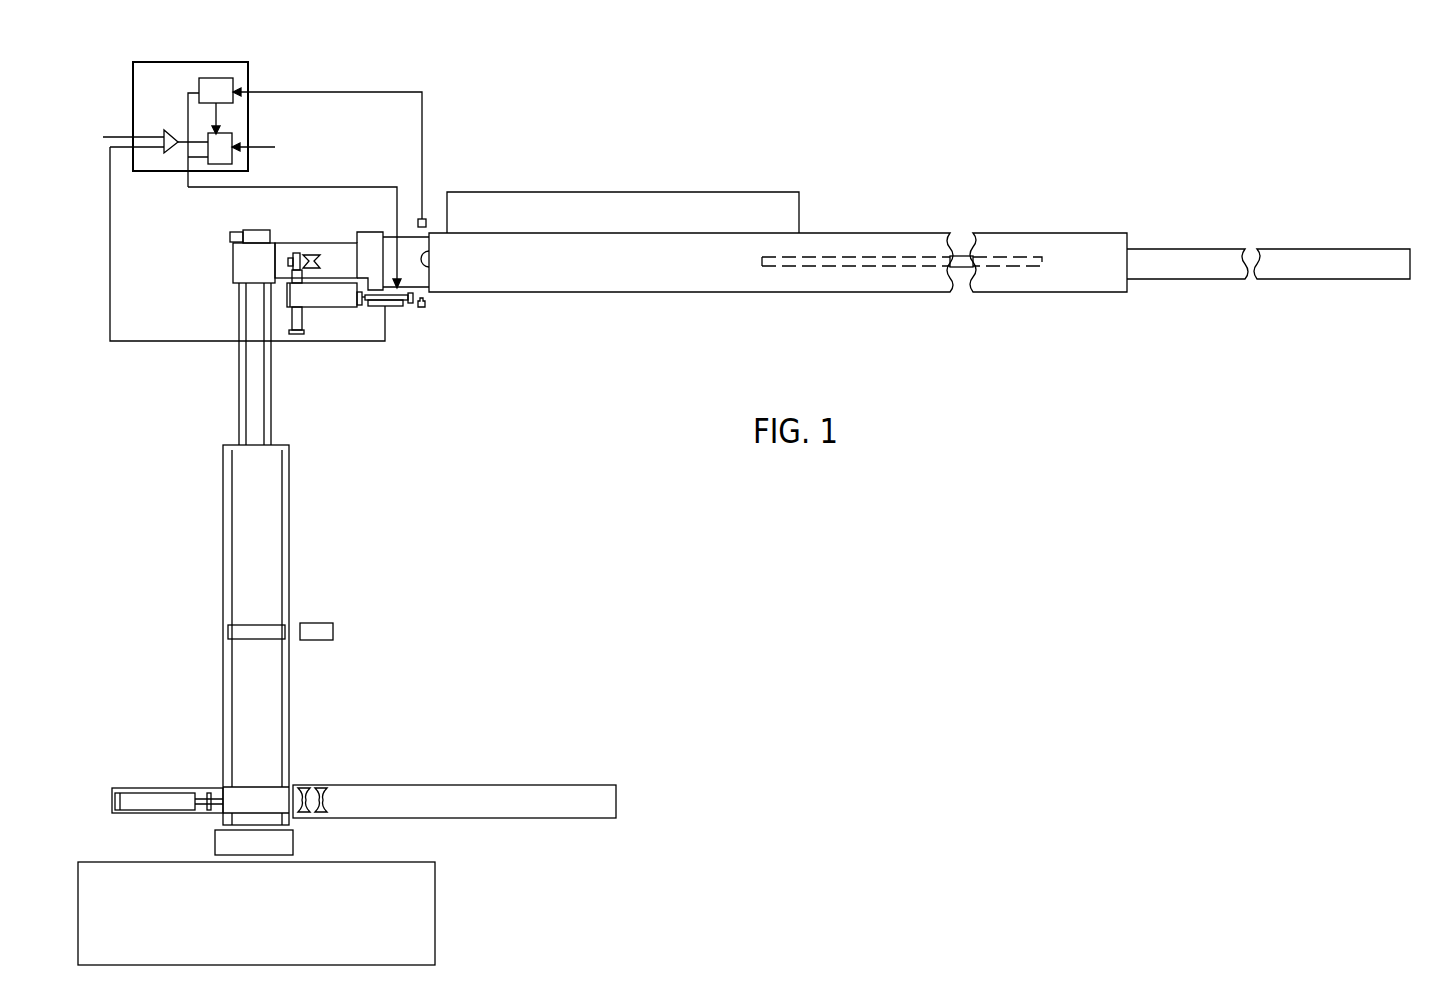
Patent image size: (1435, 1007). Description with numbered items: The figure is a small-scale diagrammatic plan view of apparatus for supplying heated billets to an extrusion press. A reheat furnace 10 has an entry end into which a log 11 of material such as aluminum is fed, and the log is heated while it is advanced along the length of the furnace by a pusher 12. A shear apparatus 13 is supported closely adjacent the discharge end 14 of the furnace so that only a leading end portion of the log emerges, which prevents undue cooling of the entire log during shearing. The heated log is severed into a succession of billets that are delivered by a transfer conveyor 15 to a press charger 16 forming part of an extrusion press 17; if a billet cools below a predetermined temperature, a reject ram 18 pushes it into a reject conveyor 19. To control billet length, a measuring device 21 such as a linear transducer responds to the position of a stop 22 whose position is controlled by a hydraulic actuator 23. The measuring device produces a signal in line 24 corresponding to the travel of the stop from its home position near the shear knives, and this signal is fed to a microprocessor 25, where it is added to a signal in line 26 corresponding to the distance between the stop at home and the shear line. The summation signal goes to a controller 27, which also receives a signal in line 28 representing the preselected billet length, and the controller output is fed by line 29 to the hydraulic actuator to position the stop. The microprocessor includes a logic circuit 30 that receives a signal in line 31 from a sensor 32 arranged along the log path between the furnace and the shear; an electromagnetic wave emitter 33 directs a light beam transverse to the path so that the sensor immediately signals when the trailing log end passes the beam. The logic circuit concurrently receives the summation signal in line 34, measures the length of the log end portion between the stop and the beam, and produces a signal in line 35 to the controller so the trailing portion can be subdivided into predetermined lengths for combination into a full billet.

The reheat furnace 10 is at (888, 235).
The log 11 is at (957, 257).
The pusher 12 is at (1153, 248).
The shear apparatus 13 is at (376, 234).
The discharge end 14 is at (432, 266).
The transfer conveyor 15 is at (270, 413).
The press charger 16 is at (293, 843).
The extrusion press 17 is at (435, 916).
The reject ram 18 is at (213, 800).
The reject conveyor 19 is at (317, 787).
The measuring device 21 is at (392, 307).
The stop 22 is at (306, 243).
The hydraulic actuator 23 is at (363, 303).
The line 24 is at (326, 341).
The microprocessor 25 is at (248, 73).
The line 26 is at (115, 136).
The controller 27 is at (222, 133).
The line 28 is at (272, 150).
The line 29 is at (330, 187).
The logic circuit 30 is at (199, 82).
The line 31 is at (425, 113).
The sensor 32 is at (425, 219).
The electromagnetic wave emitter 33 is at (427, 303).
The line 34 is at (188, 110).
The line 35 is at (220, 115).